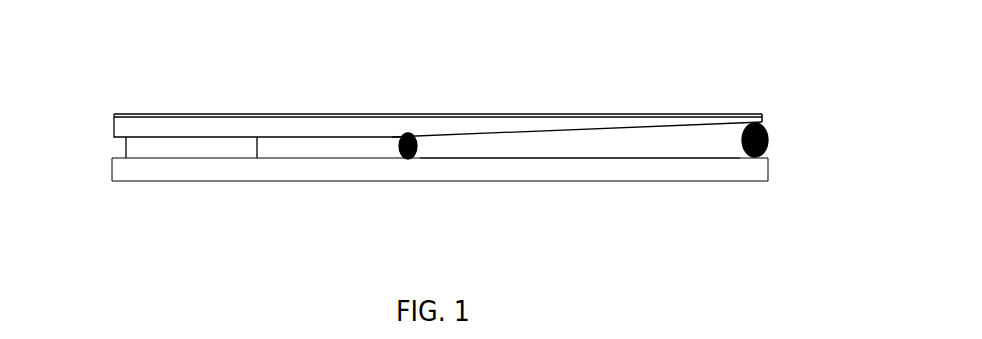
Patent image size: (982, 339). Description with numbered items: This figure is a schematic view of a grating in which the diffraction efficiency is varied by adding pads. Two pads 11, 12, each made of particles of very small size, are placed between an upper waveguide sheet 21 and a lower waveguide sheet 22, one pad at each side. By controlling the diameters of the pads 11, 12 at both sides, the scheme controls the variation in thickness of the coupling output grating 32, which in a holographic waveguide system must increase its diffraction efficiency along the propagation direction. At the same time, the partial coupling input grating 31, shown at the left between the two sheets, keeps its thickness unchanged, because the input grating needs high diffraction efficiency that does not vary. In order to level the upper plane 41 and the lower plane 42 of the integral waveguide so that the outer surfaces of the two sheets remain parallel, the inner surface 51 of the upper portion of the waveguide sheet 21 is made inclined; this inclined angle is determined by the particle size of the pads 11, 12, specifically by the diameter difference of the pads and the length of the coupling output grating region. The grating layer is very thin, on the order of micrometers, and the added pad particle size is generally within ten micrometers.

The pad 11 is at (417, 143).
The pad 12 is at (767, 123).
The waveguide sheet 21 is at (130, 125).
The waveguide sheet 22 is at (143, 177).
The coupling input grating 31 is at (190, 145).
The coupling output grating 32 is at (620, 143).
The upper plane 41 is at (499, 115).
The lower plane 42 is at (522, 182).
The inner surface 51 is at (540, 131).